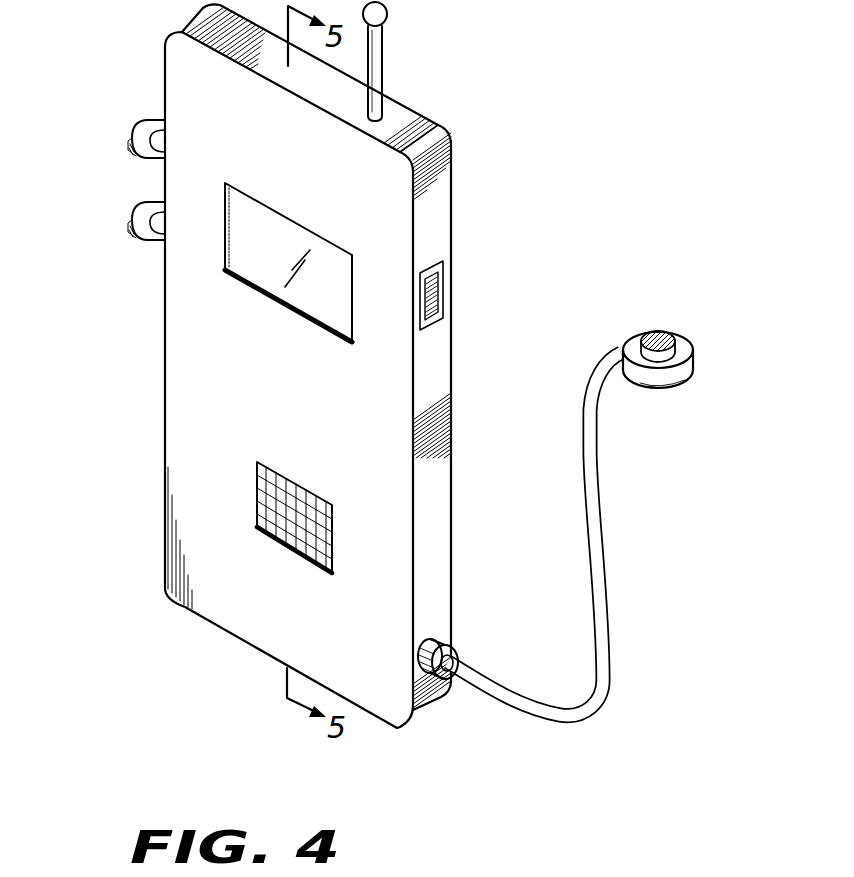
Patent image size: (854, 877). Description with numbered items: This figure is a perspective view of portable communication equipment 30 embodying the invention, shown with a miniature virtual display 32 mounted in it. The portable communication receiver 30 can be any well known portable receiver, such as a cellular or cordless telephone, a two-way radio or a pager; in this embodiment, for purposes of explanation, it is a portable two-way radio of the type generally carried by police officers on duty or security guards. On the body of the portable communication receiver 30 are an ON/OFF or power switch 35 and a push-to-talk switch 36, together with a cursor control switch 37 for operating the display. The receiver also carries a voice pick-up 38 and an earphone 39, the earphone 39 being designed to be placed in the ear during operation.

The portable communication equipment 30 is at (172, 357).
The miniature virtual display 32 is at (290, 226).
The power switch 35 is at (129, 149).
The push-to-talk switch 36 is at (129, 231).
The cursor control switch 37 is at (444, 306).
The voice pick-up 38 is at (301, 492).
The earphone 39 is at (694, 358).